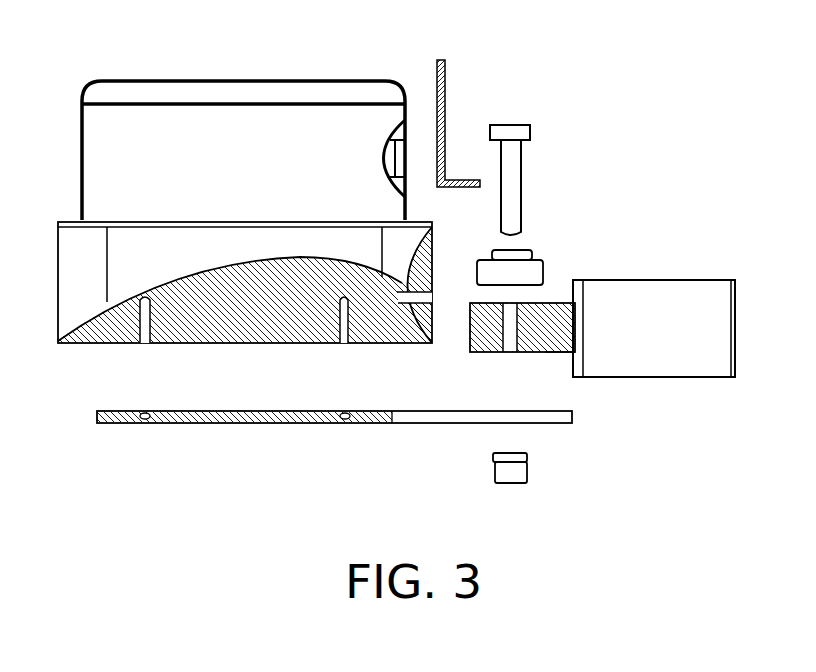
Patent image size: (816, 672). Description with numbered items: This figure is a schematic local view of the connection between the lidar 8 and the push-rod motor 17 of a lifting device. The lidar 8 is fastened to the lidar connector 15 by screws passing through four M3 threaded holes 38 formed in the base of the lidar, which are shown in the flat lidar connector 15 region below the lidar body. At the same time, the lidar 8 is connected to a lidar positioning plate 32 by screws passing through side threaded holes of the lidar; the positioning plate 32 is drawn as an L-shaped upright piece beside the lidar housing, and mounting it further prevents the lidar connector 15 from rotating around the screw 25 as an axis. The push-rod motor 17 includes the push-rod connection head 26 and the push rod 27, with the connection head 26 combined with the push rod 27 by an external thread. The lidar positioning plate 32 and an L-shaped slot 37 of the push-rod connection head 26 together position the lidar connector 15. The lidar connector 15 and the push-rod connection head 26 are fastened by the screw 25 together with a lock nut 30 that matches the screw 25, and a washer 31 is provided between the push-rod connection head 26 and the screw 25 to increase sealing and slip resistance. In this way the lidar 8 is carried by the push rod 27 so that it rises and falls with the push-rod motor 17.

The lidar 8 is at (105, 205).
The lidar positioning plate 32 is at (437, 68).
The screw 25 is at (517, 139).
The washer 31 is at (530, 258).
The push-rod connection head 26 is at (545, 305).
The push rod 27 is at (608, 280).
The push-rod motor 17 is at (703, 377).
The L-shaped slot 37 is at (572, 371).
The lidar connector 15 is at (105, 418).
The M3 threaded holes 38 is at (148, 420).
The lock nut 30 is at (515, 478).